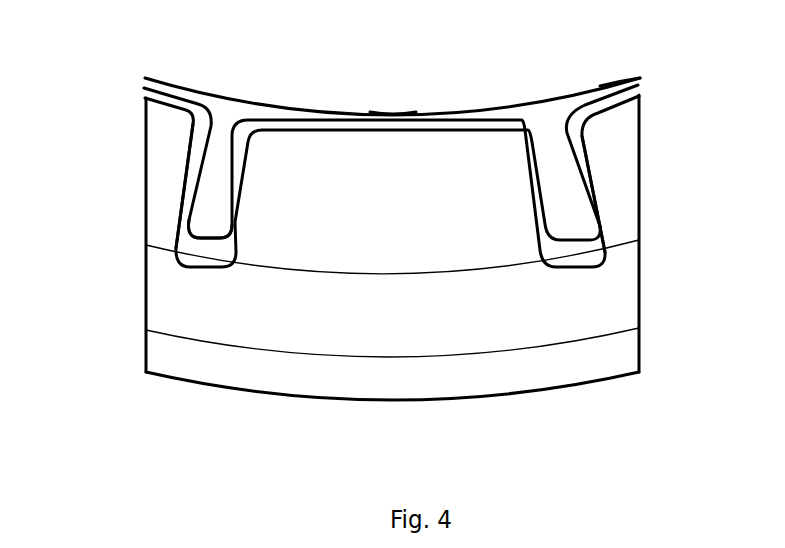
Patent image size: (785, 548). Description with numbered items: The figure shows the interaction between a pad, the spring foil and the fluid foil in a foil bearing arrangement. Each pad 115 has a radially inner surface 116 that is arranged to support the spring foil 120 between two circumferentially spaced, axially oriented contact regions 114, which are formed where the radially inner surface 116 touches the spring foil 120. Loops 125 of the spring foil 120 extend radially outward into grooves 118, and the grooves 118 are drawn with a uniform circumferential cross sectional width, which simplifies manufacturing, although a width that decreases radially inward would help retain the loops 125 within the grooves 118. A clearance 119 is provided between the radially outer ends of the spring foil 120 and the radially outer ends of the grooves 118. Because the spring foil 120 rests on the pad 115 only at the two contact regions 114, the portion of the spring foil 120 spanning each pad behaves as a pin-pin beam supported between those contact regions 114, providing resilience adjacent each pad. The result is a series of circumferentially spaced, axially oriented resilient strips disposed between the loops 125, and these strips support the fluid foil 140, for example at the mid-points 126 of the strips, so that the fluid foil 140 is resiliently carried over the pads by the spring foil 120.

The contact regions 114 is at (265, 126).
The pad 115 is at (420, 204).
The radially inner surface 116 is at (333, 126).
The grooves 118 is at (604, 233).
The clearance 119 is at (196, 247).
The spring foil 120 is at (145, 87).
The loops 125 is at (176, 228).
The mid-points 126 is at (395, 114).
The fluid foil 140 is at (636, 76).